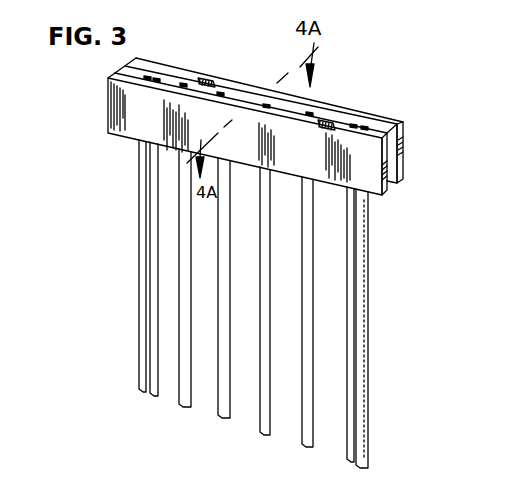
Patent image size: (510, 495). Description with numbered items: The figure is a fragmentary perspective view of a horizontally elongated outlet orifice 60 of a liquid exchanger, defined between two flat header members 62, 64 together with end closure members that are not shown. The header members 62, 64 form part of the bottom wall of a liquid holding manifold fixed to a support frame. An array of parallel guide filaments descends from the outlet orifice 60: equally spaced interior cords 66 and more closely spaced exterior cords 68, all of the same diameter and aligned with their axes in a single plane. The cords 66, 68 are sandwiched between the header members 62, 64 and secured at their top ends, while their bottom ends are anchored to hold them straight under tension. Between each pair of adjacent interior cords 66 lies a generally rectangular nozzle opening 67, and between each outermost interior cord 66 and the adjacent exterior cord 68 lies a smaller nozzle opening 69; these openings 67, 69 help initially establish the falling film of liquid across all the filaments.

The outlet orifice 60 is at (251, 78).
The header member 62 is at (404, 152).
The header member 64 is at (382, 197).
The interior cords 66 is at (217, 272).
The discrete opening 67 is at (213, 78).
The exterior cords 68 is at (139, 193).
The subdivided nozzle opening 69 is at (146, 77).